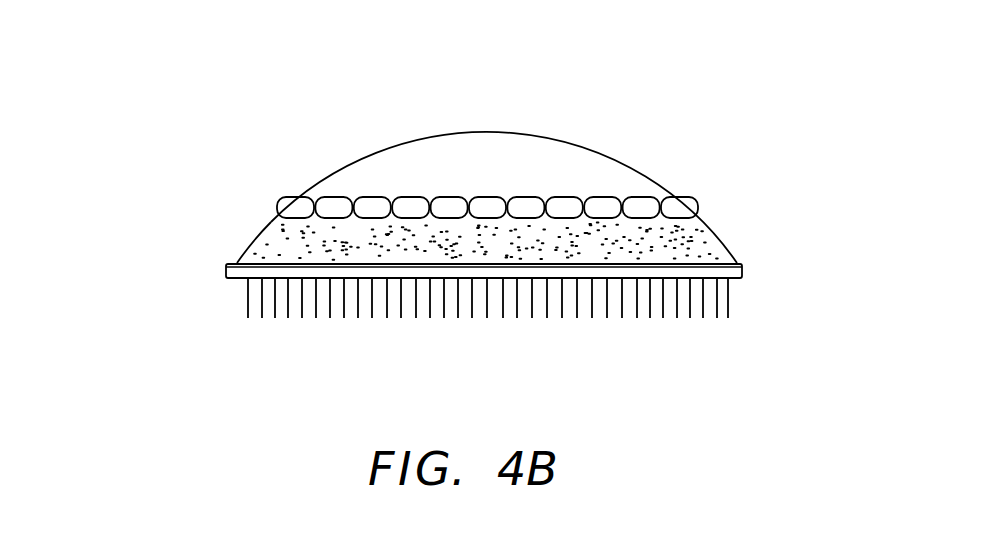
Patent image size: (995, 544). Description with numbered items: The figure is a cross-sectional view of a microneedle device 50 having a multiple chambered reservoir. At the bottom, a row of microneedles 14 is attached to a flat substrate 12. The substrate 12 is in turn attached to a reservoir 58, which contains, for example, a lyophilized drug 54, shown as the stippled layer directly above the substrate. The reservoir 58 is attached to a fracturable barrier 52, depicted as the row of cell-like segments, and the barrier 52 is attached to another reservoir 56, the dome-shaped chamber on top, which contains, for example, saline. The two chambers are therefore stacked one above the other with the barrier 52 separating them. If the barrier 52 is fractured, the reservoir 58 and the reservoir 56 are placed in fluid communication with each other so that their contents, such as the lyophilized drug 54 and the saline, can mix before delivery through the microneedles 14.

The microneedle device 50 is at (145, 60).
The substrate 12 is at (742, 273).
The microneedles 14 is at (735, 302).
The fracturable barrier 52 is at (690, 216).
The lyophilized drug 54 is at (248, 248).
The reservoir 56 is at (444, 160).
The reservoir 58 is at (373, 240).